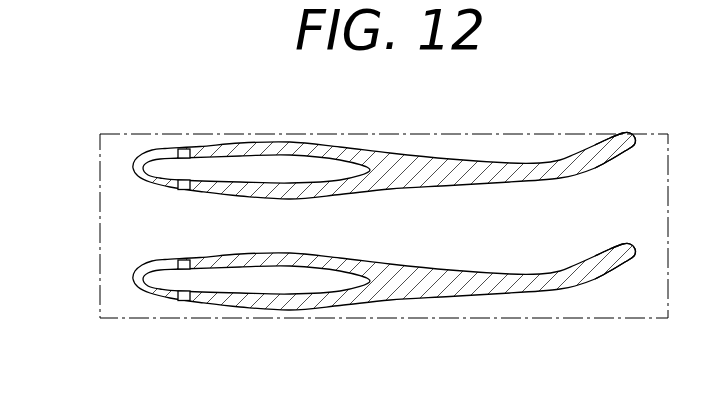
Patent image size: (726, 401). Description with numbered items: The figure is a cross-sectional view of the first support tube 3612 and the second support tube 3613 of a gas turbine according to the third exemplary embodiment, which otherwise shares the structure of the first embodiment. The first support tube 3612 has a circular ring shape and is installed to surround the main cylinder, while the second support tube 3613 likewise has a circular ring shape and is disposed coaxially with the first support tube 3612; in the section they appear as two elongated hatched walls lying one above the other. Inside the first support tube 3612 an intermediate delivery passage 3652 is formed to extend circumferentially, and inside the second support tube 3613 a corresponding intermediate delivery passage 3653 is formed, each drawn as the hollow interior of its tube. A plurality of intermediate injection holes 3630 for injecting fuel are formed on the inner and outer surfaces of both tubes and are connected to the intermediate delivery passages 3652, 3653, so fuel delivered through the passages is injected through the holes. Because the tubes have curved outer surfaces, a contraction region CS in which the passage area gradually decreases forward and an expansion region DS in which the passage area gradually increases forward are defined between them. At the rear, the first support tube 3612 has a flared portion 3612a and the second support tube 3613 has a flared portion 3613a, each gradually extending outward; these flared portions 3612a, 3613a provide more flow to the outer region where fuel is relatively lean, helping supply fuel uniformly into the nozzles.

The second support tube 3613 is at (400, 148).
The flared portion 3613a is at (603, 148).
The intermediate delivery passage 3653 is at (266, 170).
The first support tube 3612 is at (400, 308).
The flared portion 3612a is at (608, 308).
The intermediate delivery passage 3652 is at (256, 320).
The intermediate injection holes 3630 is at (187, 306).
The contraction region CS is at (213, 225).
The expansion region DS is at (436, 225).